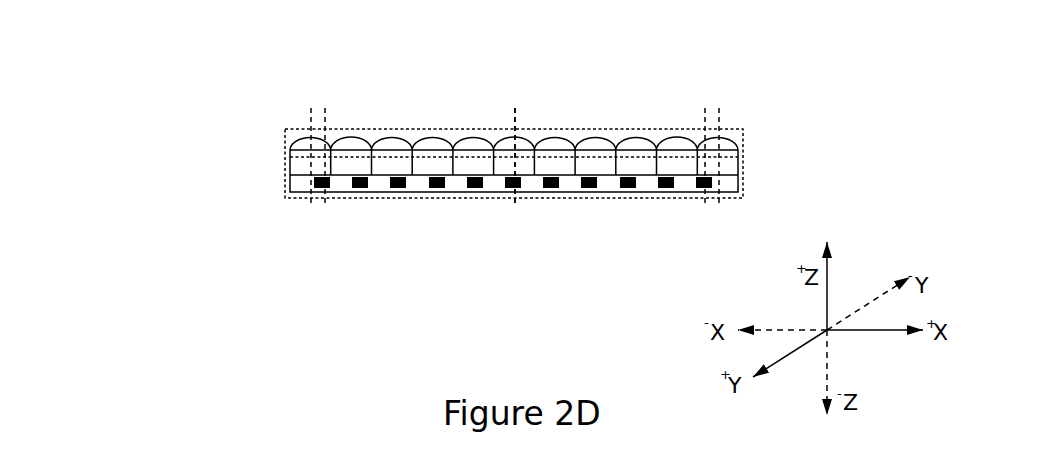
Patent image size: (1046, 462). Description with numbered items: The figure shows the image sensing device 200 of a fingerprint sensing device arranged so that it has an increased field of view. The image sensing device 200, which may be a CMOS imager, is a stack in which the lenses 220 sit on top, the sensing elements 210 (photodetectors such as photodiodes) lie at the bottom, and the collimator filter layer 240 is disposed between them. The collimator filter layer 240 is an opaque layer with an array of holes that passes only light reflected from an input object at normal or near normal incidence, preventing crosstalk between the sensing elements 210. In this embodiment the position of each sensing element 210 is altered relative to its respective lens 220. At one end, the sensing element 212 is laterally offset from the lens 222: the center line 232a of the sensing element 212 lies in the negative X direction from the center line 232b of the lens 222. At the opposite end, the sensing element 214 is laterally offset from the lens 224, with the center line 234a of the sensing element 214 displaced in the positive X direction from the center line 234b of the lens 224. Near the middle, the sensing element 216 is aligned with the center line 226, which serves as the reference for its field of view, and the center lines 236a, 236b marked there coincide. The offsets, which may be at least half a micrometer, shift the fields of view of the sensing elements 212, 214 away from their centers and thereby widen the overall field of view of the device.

The image sensing device 200 is at (147, 68).
The sensing elements 210 is at (285, 188).
The sensing element 212 is at (704, 193).
The sensing element 214 is at (328, 193).
The sensing element 216 is at (518, 193).
The lenses 220 is at (284, 139).
The lens 222 is at (745, 149).
The lens 224 is at (297, 150).
The center line 226 is at (515, 149).
The collimator filter layer 240 is at (287, 161).
The center line 232a is at (703, 112).
The center line 232b is at (721, 112).
The center line 234a is at (310, 114).
The center line 234b is at (325, 114).
The pixel boundary 236a is at (511, 113).
The pixel boundary 236b is at (520, 113).